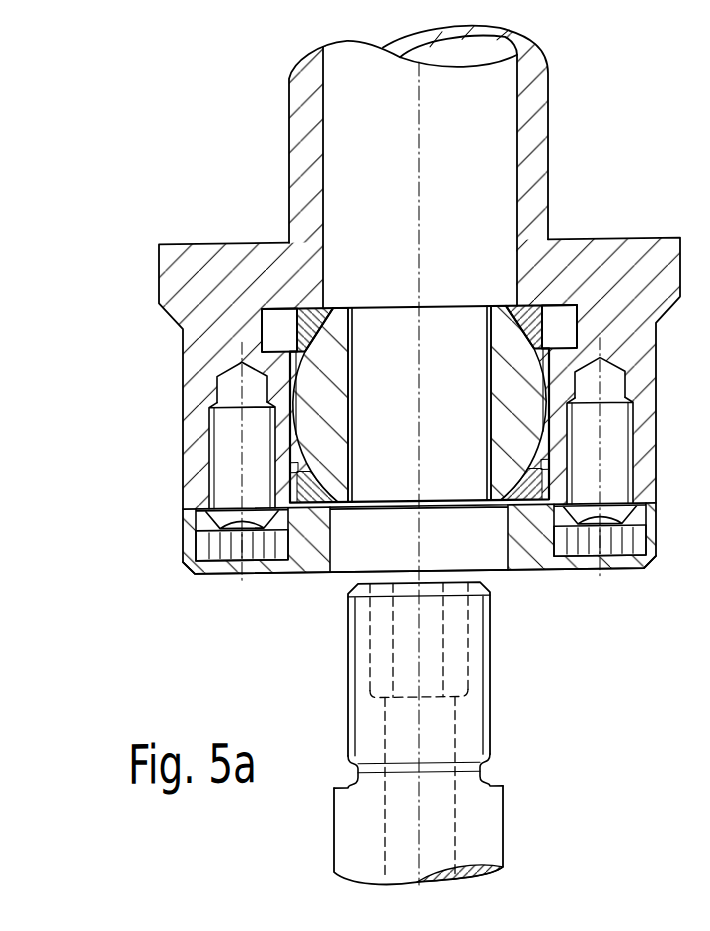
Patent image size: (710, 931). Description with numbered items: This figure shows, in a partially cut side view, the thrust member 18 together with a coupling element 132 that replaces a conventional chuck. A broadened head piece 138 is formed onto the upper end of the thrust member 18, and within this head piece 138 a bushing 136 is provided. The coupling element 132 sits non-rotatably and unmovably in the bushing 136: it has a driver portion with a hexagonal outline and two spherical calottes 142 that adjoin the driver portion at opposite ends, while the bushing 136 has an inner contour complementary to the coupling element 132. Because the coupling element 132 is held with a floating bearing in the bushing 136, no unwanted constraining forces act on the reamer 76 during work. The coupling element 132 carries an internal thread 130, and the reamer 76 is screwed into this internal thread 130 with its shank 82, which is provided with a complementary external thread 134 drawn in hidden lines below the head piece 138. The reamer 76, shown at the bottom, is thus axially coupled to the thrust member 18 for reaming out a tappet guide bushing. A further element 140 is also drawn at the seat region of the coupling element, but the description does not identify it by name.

The thrust member 18 is at (536, 138).
The broadened head piece 138 is at (613, 270).
The retaining ring 140 is at (314, 376).
The spherical calottes 142 is at (315, 309).
The coupling element 132 is at (332, 356).
The internal thread 130 is at (352, 377).
The bushing 136 is at (325, 509).
The external thread 134 is at (492, 661).
The shank 82 is at (463, 733).
The reamer 76 is at (483, 838).